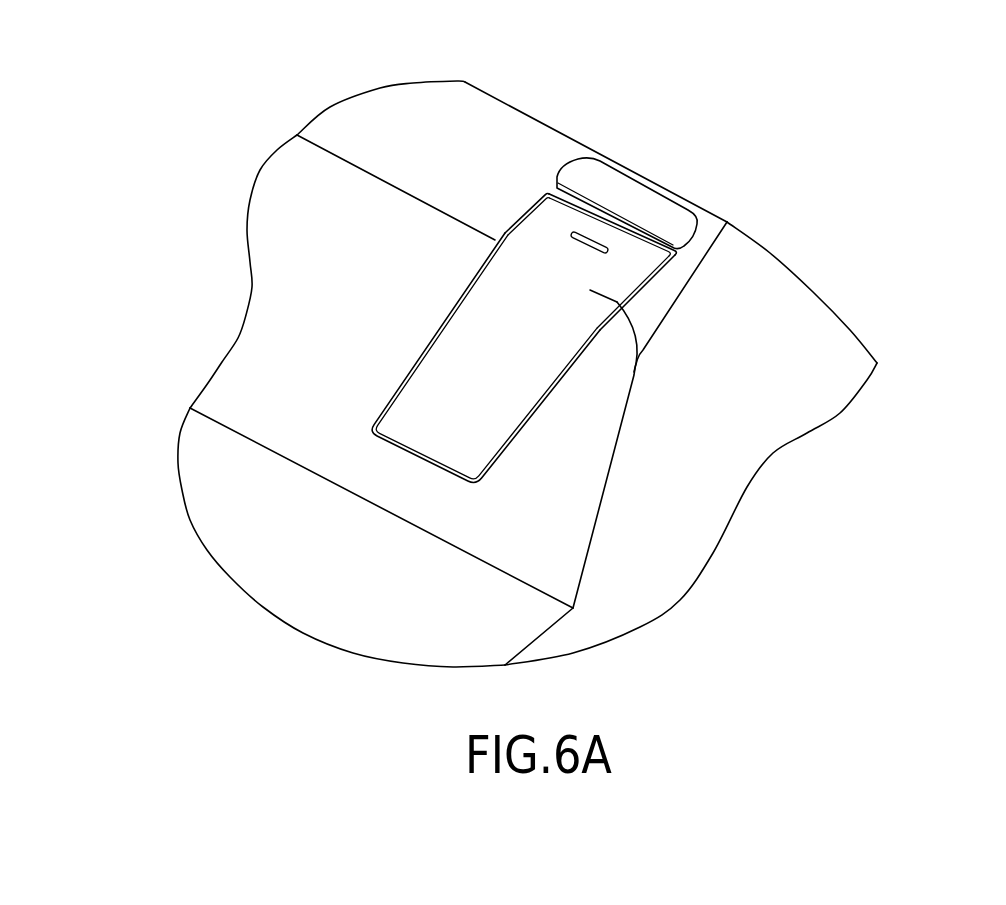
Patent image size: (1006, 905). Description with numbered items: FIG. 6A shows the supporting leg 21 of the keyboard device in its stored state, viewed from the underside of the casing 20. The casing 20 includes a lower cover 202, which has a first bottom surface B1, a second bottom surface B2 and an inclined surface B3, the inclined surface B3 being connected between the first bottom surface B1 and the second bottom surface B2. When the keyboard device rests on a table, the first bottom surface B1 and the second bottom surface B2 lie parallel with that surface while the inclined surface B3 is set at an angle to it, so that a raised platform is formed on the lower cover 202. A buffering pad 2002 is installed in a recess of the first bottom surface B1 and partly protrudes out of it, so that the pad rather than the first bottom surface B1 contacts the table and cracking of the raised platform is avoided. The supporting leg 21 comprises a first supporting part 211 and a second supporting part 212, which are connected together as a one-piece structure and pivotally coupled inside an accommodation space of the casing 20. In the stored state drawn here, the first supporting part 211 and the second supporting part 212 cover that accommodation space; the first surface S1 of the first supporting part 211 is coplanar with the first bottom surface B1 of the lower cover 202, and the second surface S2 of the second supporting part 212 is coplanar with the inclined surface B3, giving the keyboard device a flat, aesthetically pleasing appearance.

The casing 20 is at (537, 369).
The lower cover 202 is at (537, 369).
The supporting leg 21 is at (609, 382).
The first supporting part 211 is at (569, 262).
The second supporting part 212 is at (467, 357).
The buffering pad 2002 is at (637, 197).
The first surface S1 is at (626, 266).
The second surface S2 is at (409, 412).
The first bottom surface B1 is at (481, 111).
The second bottom surface B2 is at (198, 457).
The inclined surface B3 is at (269, 205).